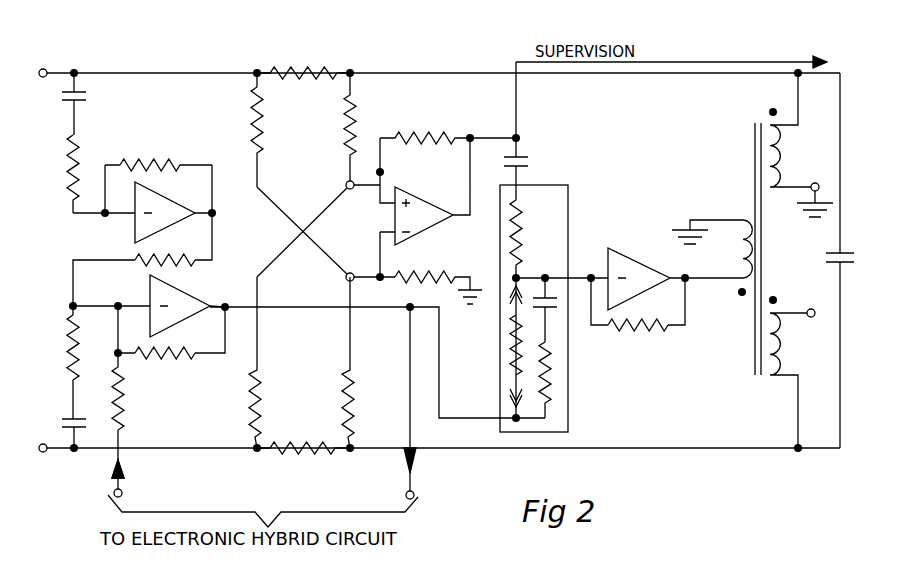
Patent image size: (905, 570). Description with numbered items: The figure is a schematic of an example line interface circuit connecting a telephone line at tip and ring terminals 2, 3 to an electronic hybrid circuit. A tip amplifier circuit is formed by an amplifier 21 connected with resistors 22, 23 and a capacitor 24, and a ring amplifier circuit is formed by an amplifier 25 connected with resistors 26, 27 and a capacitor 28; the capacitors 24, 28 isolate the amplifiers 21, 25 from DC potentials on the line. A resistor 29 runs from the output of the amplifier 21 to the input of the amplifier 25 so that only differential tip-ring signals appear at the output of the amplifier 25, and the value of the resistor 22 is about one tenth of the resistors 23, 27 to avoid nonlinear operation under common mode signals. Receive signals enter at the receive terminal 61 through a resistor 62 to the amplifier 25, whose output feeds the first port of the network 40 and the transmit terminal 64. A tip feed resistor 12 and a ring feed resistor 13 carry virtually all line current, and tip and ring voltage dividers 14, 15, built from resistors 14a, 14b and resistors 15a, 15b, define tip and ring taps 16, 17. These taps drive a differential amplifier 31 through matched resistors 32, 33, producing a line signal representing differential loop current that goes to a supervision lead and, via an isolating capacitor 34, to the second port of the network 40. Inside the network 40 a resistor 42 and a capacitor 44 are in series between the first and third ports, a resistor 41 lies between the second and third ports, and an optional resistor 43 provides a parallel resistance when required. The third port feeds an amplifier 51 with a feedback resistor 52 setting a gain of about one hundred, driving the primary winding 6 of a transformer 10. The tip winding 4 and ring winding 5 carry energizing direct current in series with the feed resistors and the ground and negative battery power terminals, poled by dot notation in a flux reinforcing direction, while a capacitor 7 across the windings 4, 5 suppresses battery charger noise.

The tip terminal 2 is at (60, 34).
The ring terminal 3 is at (42, 452).
The tip winding 4 is at (780, 172).
The ring winding 5 is at (780, 362).
The primary winding 6 is at (735, 236).
The capacitor 7 is at (822, 258).
The transformer 10 is at (797, 247).
The tip feed resistor 12 is at (288, 80).
The ring feed resistor 13 is at (276, 438).
The tip voltage divider 14 is at (275, 255).
The resistor 14a is at (354, 100).
The resistor 14b is at (262, 385).
The ring voltage divider 15 is at (275, 205).
The resistor 15a is at (262, 112).
The resistor 15b is at (357, 404).
The tip tap 16 is at (346, 185).
The ring tap 17 is at (346, 279).
The amplifier 21 is at (135, 228).
The resistor 22 is at (153, 160).
The resistor 23 is at (66, 185).
The capacitor 24 is at (86, 97).
The amplifier 25 is at (150, 290).
The resistor 26 is at (152, 360).
The resistor 27 is at (64, 365).
The capacitor 28 is at (56, 421).
The resistor 29 is at (183, 266).
The differential amplifier 31 is at (395, 222).
The resistor 32 is at (414, 131).
The resistor 33 is at (436, 272).
The capacitor 34 is at (532, 158).
The network 40 is at (545, 185).
The resistor 41 is at (522, 238).
The resistor 42 is at (552, 393).
The resistor 43 is at (510, 353).
The capacitor 44 is at (558, 303).
The amplifier 51 is at (608, 248).
The feedback resistor 52 is at (638, 332).
The receive terminal 61 is at (150, 483).
The resistor 62 is at (125, 404).
The transmit terminal 64 is at (368, 484).